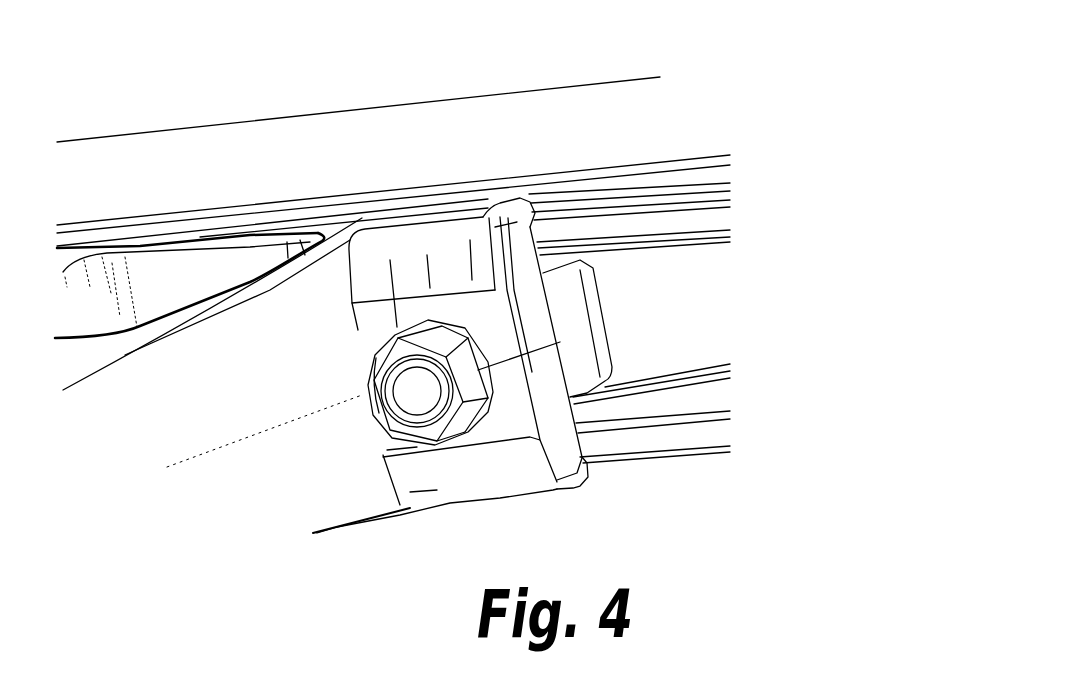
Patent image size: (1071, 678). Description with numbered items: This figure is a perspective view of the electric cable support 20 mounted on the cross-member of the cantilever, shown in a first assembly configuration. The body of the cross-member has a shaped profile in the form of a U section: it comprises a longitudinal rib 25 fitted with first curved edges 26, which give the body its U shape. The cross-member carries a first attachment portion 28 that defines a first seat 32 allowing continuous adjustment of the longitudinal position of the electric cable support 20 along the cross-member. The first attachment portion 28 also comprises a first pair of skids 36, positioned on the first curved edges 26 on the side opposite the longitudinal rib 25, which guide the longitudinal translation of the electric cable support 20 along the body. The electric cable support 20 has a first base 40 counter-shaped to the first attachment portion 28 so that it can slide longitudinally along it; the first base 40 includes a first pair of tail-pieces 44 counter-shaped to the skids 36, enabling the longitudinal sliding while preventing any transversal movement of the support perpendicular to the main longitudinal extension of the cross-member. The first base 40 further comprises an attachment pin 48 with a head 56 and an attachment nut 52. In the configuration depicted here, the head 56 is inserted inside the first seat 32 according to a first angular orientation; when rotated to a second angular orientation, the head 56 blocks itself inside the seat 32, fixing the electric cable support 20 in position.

The electric cable support 20 is at (170, 431).
The longitudinal rib 25 is at (717, 272).
The first curved edges 26 is at (658, 460).
The first attachment portion 28 is at (727, 343).
The first seat 32 is at (707, 406).
The first pair of skids 36 is at (699, 214).
The first base 40 is at (447, 507).
The first pair of tail-pieces 44 is at (560, 535).
The attachment pin 48 is at (355, 420).
The attachment nut 52 is at (400, 337).
The head 56 is at (578, 312).